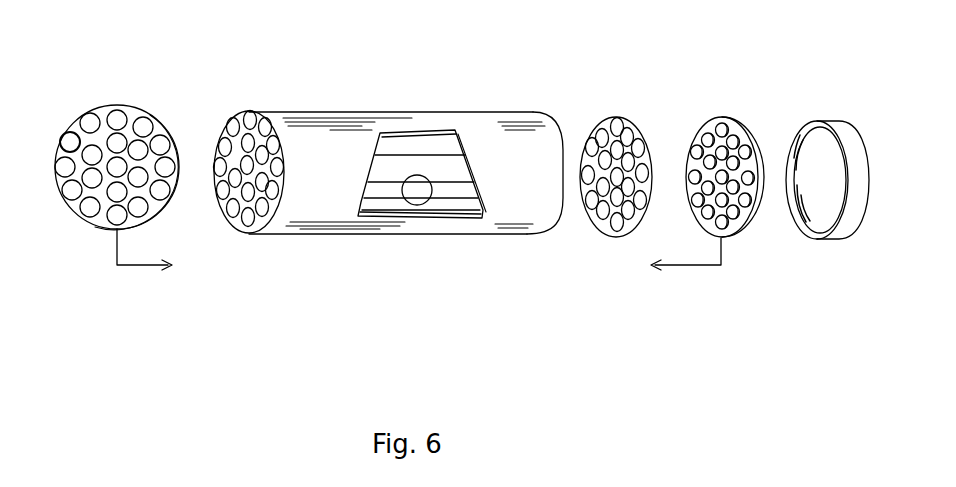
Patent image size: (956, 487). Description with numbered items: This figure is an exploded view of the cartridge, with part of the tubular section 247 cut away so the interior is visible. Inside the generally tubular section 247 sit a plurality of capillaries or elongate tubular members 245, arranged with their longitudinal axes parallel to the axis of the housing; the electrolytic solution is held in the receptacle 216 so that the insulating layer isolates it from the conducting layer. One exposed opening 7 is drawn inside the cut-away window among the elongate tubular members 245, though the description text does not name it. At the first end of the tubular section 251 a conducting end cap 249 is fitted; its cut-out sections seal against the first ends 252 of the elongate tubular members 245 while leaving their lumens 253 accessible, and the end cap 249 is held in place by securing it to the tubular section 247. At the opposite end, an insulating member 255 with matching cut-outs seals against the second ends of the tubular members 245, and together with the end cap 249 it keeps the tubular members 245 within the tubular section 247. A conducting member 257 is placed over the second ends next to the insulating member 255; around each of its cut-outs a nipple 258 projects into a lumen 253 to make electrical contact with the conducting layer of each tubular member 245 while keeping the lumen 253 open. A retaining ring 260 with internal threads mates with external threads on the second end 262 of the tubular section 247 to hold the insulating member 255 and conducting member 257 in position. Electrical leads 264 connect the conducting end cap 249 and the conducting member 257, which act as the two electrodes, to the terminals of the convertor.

The sensor opening 7 is at (421, 204).
The receptacle 216 is at (264, 200).
The elongate tubular members 245 is at (438, 198).
The tubular section 247 is at (418, 138).
The conducting end cap 249 is at (125, 106).
The tubular section 251 is at (256, 173).
The first ends 252 is at (214, 197).
The lumens 253 is at (421, 176).
The insulating member 255 is at (623, 120).
The conducting member 257 is at (754, 189).
The nipple 258 is at (764, 203).
The retaining ring 260 is at (848, 226).
The second end 262 is at (543, 122).
The electrical leads 264 is at (138, 262).